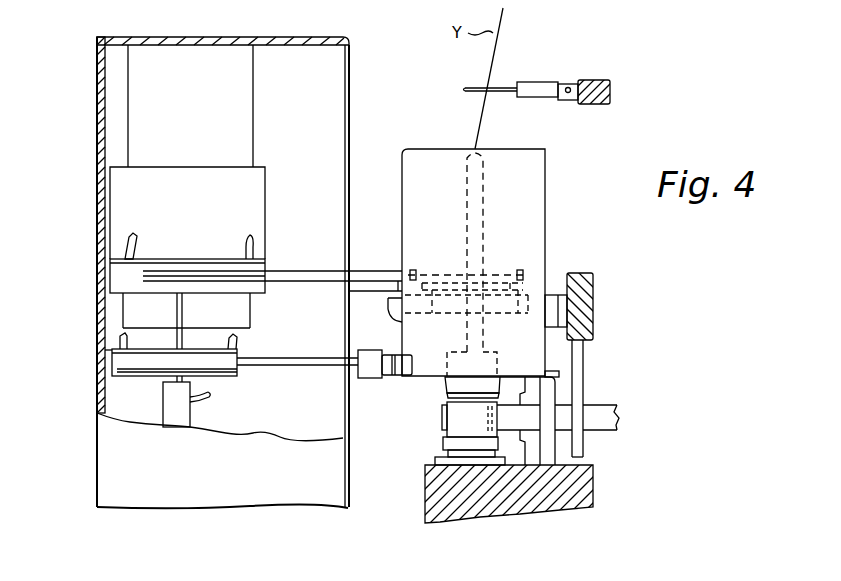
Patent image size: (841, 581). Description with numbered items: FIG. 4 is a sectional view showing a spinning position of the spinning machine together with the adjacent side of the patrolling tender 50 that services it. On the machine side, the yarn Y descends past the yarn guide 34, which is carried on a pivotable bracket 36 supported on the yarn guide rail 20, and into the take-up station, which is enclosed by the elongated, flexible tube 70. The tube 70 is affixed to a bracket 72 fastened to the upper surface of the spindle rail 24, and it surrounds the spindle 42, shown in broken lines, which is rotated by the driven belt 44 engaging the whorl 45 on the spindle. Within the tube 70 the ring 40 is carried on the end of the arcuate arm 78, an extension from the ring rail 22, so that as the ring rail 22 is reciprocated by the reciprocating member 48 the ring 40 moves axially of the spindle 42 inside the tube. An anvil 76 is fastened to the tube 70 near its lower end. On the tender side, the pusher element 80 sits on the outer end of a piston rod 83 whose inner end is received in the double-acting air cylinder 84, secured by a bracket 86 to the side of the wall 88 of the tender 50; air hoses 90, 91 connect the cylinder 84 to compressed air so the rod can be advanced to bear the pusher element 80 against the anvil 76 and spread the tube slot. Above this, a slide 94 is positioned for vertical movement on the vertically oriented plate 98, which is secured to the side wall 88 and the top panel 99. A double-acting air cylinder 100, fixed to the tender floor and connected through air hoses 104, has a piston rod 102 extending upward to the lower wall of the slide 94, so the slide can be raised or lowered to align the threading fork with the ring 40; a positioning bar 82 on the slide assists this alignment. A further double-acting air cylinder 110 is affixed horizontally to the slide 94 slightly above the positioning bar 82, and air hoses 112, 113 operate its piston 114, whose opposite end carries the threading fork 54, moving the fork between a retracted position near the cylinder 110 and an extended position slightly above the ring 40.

The yarn guide rail 20 is at (605, 78).
The ring rail 22 is at (592, 281).
The spindle rail 24 is at (433, 492).
The yarn guide 34 is at (500, 85).
The pivotable bracket 36 is at (545, 82).
The ring 40 is at (525, 282).
The spindle 42 is at (482, 185).
The driven belt 44 is at (612, 418).
The whorl 45 is at (462, 425).
The reciprocating member 48 is at (583, 360).
The tender 50 is at (94, 143).
The threading fork 54 is at (518, 275).
The flexible sleeve or tube 70 is at (527, 157).
The bracket 72 is at (553, 393).
The anvil 76 is at (405, 376).
The arcuate arm 78 is at (392, 305).
The pusher element 80 is at (371, 375).
The positioning bar 82 is at (324, 284).
The piston rod 83 is at (296, 368).
The double-acting air cylinder 84 is at (130, 370).
The bracket 86 is at (112, 362).
The wall 88 is at (100, 108).
The air hose 90 is at (238, 342).
The air hose 91 is at (118, 338).
The slide 94 is at (128, 195).
The vertically oriented plate 98 is at (197, 103).
The top panel 99 is at (247, 38).
The double-acting air cylinder 100 is at (175, 418).
The piston rod 102 is at (179, 313).
The air hoses 104 is at (210, 394).
The double-acting air cylinder 110 is at (125, 273).
The air hose 112 is at (134, 232).
The air hose 113 is at (250, 239).
The piston 114 is at (330, 246).